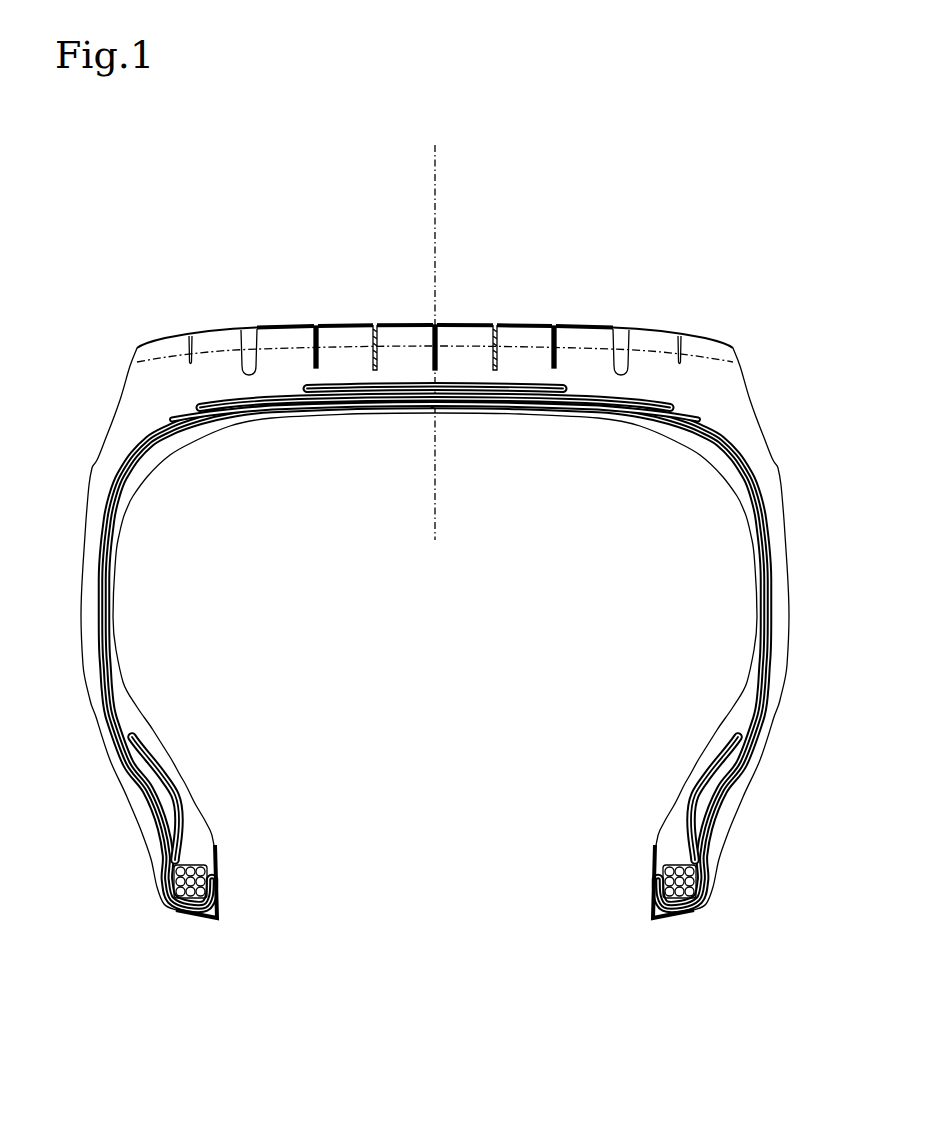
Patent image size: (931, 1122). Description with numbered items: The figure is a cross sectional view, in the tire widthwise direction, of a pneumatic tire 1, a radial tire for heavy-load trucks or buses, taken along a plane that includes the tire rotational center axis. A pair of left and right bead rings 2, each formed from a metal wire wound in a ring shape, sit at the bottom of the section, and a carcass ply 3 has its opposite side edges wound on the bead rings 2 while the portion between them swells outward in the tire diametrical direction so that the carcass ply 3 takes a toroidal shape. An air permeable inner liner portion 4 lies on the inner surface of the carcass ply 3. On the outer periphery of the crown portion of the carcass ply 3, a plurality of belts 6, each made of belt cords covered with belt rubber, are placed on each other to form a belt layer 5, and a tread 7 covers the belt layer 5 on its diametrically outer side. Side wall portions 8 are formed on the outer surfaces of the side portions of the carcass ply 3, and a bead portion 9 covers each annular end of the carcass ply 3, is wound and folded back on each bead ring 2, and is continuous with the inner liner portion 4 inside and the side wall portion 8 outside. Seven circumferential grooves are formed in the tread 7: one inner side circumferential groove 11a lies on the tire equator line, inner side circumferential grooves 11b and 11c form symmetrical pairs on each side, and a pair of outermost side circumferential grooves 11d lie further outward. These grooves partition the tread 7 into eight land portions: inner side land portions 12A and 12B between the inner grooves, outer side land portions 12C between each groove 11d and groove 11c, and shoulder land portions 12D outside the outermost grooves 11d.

The pneumatic tire 1 is at (411, 178).
The bead ring 2 is at (218, 868).
The carcass ply 3 is at (463, 404).
The inner liner portion 4 is at (125, 513).
The belt layer 5 is at (407, 486).
The belt 6 is at (325, 398).
The tread 7 is at (452, 323).
The side wall portion 8 is at (88, 625).
The bead portion 9 is at (198, 908).
The inner side circumferential groove 11a is at (433, 325).
The inner side circumferential groove 11b is at (375, 325).
The inner side circumferential groove 11c is at (316, 326).
The outermost side circumferential groove 11d is at (247, 330).
The inner side land portion 12A is at (403, 325).
The inner side land portion 12B is at (347, 326).
The outer side land portion 12C is at (285, 327).
The shoulder land portion 12D is at (210, 331).